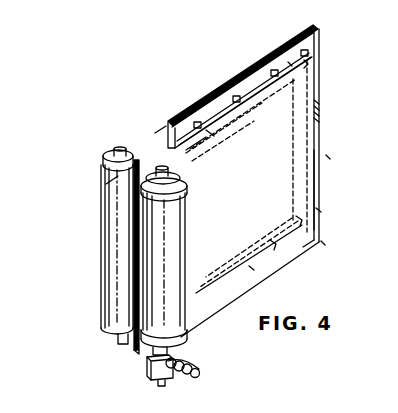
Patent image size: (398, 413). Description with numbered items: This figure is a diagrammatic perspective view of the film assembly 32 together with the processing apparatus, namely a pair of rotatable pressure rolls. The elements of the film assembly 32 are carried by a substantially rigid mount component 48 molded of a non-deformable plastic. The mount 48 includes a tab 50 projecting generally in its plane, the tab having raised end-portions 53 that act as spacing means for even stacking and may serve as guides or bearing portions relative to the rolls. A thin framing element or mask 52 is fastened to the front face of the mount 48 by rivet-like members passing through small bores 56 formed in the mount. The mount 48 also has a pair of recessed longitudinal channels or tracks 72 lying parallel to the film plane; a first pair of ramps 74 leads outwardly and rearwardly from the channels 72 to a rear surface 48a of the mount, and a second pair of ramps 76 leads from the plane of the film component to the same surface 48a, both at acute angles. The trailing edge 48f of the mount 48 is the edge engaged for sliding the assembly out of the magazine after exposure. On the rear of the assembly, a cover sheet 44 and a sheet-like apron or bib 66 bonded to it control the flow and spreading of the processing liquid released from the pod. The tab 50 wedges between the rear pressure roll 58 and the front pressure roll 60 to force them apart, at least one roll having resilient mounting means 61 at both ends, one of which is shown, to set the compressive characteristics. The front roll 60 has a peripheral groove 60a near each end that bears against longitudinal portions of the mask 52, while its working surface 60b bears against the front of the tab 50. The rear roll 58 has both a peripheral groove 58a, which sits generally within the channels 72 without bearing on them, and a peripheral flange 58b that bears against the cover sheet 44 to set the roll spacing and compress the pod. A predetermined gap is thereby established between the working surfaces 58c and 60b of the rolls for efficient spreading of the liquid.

The film assembly 32 is at (238, 69).
The cover sheet 44 is at (243, 227).
The mount component 48 is at (286, 252).
The rear surface of the mount 48a is at (316, 110).
The trailing edge of the mount 48f is at (320, 186).
The tab 50 is at (108, 183).
The mask 52 is at (262, 128).
The raised end-portions 53 is at (157, 134).
The small bores 56 is at (196, 124).
The rear pressure roll 58 is at (200, 266).
The peripheral groove 58a is at (181, 181).
The peripheral flange 58b is at (187, 192).
The working surface of the rear pressure roll 58c is at (185, 243).
The front pressure roll 60 is at (198, 235).
The peripheral groove 60a is at (104, 160).
The working surface of the front pressure roll 60b is at (114, 283).
The resilient mounting means 61 is at (181, 381).
The apron 66 is at (330, 157).
The longitudinal channels 72 is at (210, 133).
The first pair of ramps 74 is at (289, 63).
The second pair of ramps 76 is at (307, 63).